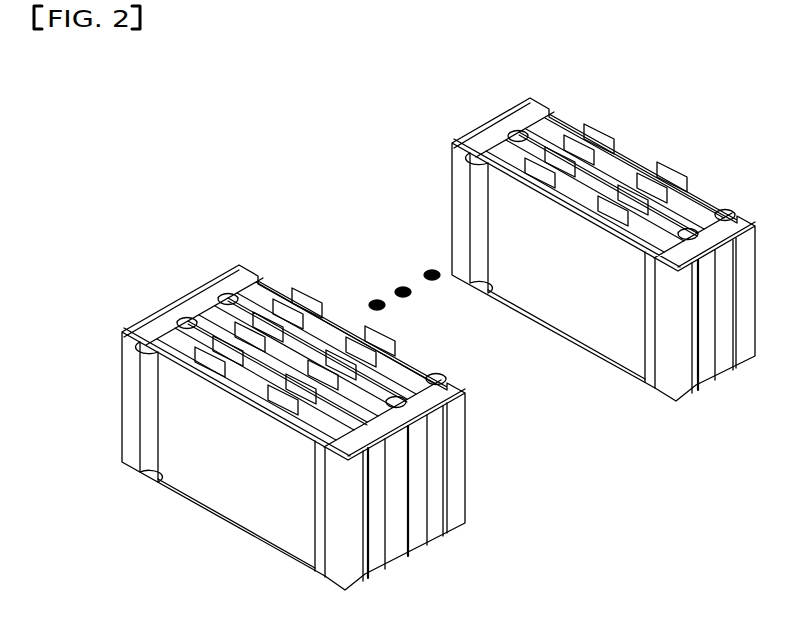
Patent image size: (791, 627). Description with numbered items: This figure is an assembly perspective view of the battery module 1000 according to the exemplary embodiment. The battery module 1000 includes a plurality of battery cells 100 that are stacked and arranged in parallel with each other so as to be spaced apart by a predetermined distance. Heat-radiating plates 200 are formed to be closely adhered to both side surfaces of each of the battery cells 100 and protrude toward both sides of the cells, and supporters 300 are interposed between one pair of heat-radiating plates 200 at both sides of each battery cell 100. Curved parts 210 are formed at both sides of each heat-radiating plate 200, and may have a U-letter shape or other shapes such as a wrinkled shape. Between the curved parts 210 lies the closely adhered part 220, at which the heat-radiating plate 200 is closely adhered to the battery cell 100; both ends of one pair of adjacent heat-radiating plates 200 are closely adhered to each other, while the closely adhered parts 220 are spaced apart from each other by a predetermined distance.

The battery module 1000 is at (235, 141).
The battery cell 100 is at (175, 336).
The heat-radiating plate 200 is at (116, 398).
The curved part 210 is at (238, 281).
The closely adhered part 220 is at (247, 515).
The supporter 300 is at (188, 303).